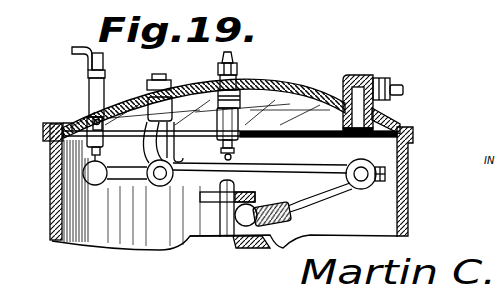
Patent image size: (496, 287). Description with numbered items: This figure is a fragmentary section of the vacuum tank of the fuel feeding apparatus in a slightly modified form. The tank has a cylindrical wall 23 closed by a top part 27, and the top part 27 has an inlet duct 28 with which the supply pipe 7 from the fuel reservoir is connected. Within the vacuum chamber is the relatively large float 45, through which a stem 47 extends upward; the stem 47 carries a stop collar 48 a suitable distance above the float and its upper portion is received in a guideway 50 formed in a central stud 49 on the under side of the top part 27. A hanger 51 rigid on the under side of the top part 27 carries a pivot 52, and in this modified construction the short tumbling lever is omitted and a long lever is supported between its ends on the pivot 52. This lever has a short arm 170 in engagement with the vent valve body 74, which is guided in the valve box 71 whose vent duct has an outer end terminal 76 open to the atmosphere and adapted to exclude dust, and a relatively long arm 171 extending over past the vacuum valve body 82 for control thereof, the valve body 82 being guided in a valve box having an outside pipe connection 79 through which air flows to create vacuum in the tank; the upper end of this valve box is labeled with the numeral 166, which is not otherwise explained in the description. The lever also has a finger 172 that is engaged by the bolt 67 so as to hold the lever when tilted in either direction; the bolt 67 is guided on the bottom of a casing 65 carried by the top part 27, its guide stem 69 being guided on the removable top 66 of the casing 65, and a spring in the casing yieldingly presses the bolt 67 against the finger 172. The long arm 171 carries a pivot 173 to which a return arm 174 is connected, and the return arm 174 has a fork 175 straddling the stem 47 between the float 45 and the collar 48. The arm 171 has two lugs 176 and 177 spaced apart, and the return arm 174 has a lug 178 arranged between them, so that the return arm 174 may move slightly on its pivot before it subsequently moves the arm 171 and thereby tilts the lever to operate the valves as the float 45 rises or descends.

The supply pipe 7 is at (397, 88).
The cylindrical wall 23 is at (123, 238).
The top part 27 is at (280, 82).
The inlet duct 28 is at (347, 88).
The float 45 is at (233, 240).
The stem 47 is at (224, 218).
The stop collar 48 is at (257, 194).
The central stud 49 is at (238, 123).
The guideway 50 is at (240, 101).
The hanger 51 is at (176, 150).
The pivot 52 is at (158, 178).
The casing 65 is at (128, 101).
The removable top 66 is at (156, 80).
The bolt 67 is at (92, 105).
The guide stem 69 is at (167, 80).
The valve box 71 is at (87, 140).
The valve body 74 is at (90, 154).
The outer end terminal 76 is at (71, 50).
The pipe connection 79 is at (234, 66).
The valve body 82 is at (238, 146).
The stem head 166 is at (236, 56).
The short arm 170 is at (123, 180).
The long arm 171 is at (315, 166).
The finger 172 is at (145, 142).
The pivot 173 is at (360, 183).
The return arm 174 is at (320, 203).
The fork 175 is at (270, 241).
The lug 176 is at (384, 169).
The lug 177 is at (384, 179).
The lug 178 is at (386, 174).